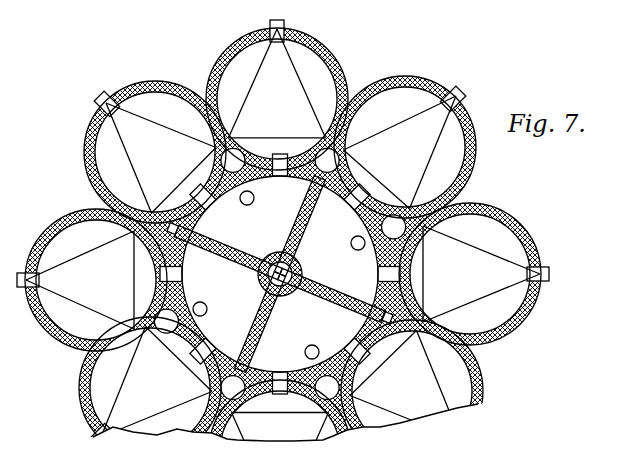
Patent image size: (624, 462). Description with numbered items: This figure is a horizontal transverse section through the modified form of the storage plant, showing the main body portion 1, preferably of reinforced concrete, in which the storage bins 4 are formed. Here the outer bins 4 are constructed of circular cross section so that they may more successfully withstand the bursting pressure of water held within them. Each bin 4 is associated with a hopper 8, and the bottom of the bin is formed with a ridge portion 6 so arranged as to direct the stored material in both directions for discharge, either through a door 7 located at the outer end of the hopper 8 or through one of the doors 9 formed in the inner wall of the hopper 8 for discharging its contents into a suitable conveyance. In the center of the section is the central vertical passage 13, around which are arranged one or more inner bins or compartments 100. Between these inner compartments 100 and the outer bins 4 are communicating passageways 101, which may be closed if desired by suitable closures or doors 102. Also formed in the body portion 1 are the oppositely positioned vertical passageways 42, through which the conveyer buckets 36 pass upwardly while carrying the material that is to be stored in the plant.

The main body portion 1 is at (424, 78).
The storage bin 4 is at (423, 135).
The ridge portion 6 is at (290, 131).
The door 7 is at (274, 26).
The hopper 8 is at (287, 81).
The door 9 is at (354, 238).
The central vertical passage 13 is at (290, 268).
The conveyer bucket 36 is at (183, 248).
The vertical passageway 42 is at (190, 227).
The bin or compartment 100 is at (280, 274).
The communicating passageway 101 is at (278, 165).
The closure or door 102 is at (315, 200).